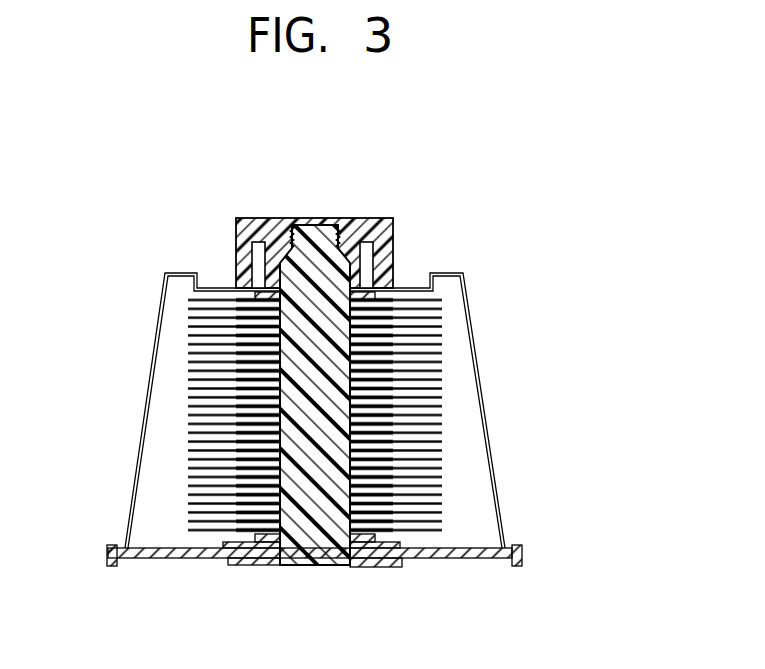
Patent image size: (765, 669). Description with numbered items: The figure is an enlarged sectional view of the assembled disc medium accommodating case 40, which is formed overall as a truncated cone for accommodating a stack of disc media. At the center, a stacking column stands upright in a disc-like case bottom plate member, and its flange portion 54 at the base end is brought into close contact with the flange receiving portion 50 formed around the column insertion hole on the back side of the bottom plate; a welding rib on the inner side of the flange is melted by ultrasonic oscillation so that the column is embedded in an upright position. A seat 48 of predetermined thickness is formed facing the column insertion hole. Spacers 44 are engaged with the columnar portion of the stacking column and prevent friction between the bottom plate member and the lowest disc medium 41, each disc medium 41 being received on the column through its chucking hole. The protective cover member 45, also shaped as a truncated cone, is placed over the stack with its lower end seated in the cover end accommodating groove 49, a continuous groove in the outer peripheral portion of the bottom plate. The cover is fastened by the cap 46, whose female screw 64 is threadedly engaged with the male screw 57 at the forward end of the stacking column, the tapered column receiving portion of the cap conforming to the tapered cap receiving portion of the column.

The disc medium accommodating case 40 is at (479, 277).
The disc medium 41 is at (189, 405).
The spacers 44 is at (370, 297).
The protective cover member 45 is at (482, 393).
The cap 46 is at (383, 222).
The seat 48 is at (410, 550).
The cover end accommodating groove 49 is at (512, 548).
The flange receiving portion 50 is at (233, 567).
The flange portion 54 is at (263, 567).
The male screw 57 is at (327, 232).
The female screw 64 is at (283, 230).